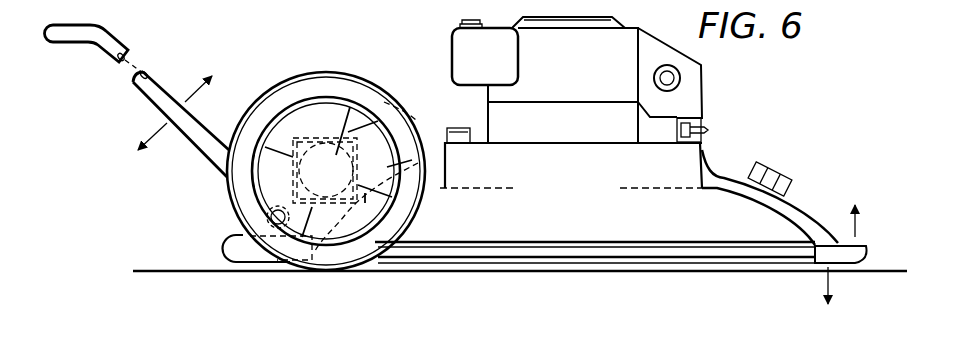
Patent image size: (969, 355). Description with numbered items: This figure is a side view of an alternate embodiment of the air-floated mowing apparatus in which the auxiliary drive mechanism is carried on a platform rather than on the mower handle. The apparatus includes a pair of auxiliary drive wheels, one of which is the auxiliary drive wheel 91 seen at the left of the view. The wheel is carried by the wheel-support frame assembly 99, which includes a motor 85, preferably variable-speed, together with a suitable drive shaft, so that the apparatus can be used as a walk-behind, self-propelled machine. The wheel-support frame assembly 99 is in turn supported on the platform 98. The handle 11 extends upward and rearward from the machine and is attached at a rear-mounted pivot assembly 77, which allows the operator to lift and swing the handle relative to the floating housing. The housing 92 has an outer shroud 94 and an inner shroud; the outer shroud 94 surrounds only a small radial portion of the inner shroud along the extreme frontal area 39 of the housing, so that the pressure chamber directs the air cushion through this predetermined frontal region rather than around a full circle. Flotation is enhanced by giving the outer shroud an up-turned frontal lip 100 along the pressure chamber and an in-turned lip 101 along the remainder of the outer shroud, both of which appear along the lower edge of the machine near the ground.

The handle 11 is at (207, 128).
The extreme frontal area 39 is at (873, 230).
The pivot assembly 77 is at (273, 212).
The motor 85 is at (386, 112).
The auxiliary drive wheel 91 is at (243, 192).
The housing 92 is at (725, 176).
The outer shroud 94 is at (800, 200).
The platform 98 is at (428, 138).
The wheel-support frame assembly 99 is at (317, 138).
The up-turned frontal lip 100 is at (868, 257).
The in-turned lip 101 is at (730, 263).